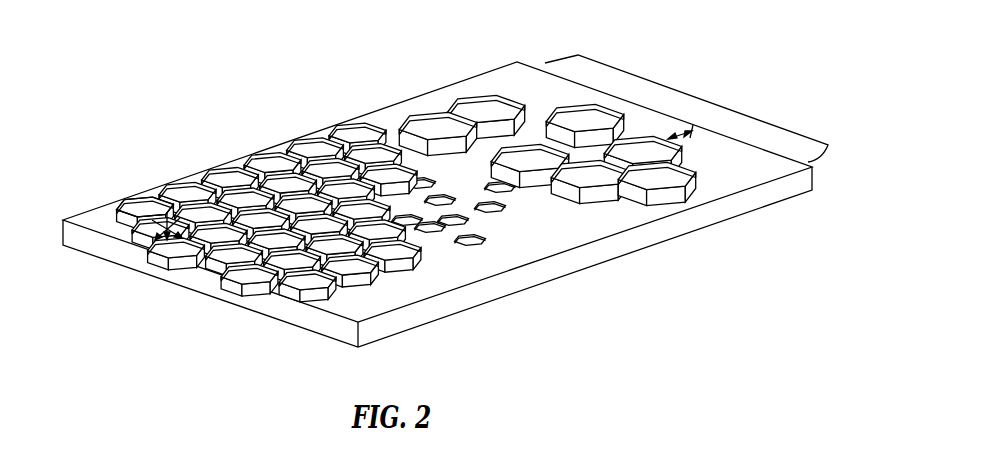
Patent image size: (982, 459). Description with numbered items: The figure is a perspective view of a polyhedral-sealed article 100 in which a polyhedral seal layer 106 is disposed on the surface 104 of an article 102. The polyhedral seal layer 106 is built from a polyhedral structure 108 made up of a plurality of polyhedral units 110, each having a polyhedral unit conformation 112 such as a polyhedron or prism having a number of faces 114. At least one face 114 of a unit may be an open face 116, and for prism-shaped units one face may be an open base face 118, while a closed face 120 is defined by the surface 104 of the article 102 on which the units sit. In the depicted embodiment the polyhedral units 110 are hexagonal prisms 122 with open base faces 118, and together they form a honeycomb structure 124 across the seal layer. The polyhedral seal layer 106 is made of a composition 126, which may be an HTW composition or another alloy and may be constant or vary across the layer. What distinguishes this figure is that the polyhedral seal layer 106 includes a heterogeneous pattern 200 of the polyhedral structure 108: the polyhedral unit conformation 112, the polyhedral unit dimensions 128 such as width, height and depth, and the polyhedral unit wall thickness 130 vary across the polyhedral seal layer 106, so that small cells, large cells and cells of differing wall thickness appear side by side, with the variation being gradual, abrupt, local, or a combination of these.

The polyhedral-sealed article 100 is at (439, 200).
The article 102 is at (360, 127).
The surface 104 is at (492, 75).
The polyhedral seal layer 106 is at (707, 102).
The polyhedral structure 108 is at (273, 144).
The polyhedral units 110 is at (125, 203).
The polyhedral unit conformation 112 is at (148, 197).
The faces 114 is at (312, 273).
The open face 116 is at (178, 188).
The open base face 118 is at (197, 173).
The closed face 120 is at (363, 282).
The hexagonal prisms 122 is at (475, 102).
The honeycomb structure 124 is at (713, 181).
The composition 126 is at (428, 107).
The polyhedral unit dimensions 128 is at (150, 213).
The polyhedral unit wall thickness 130 is at (695, 133).
The heterogeneous pattern 200 is at (436, 236).